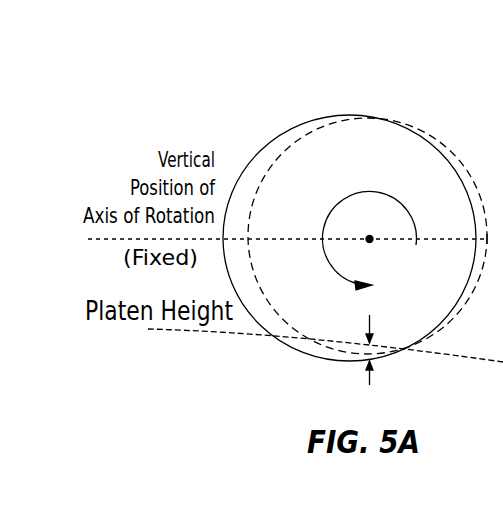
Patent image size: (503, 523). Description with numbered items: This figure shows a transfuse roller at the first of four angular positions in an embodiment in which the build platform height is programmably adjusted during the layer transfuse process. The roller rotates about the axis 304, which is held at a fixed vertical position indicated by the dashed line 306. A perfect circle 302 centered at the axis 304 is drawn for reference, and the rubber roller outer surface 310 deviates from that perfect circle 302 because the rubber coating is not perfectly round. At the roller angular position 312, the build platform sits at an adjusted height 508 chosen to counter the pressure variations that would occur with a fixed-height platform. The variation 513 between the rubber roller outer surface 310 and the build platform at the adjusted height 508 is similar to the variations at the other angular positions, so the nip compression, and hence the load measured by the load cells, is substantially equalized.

The perfect circle 302 is at (456, 160).
The axis 304 is at (373, 243).
The dashed line 306 is at (97, 243).
The rubber roller outer surface 310 is at (282, 136).
The roller angular position 312 is at (352, 285).
The adjusted height 508 is at (161, 332).
The variation 513 is at (372, 350).